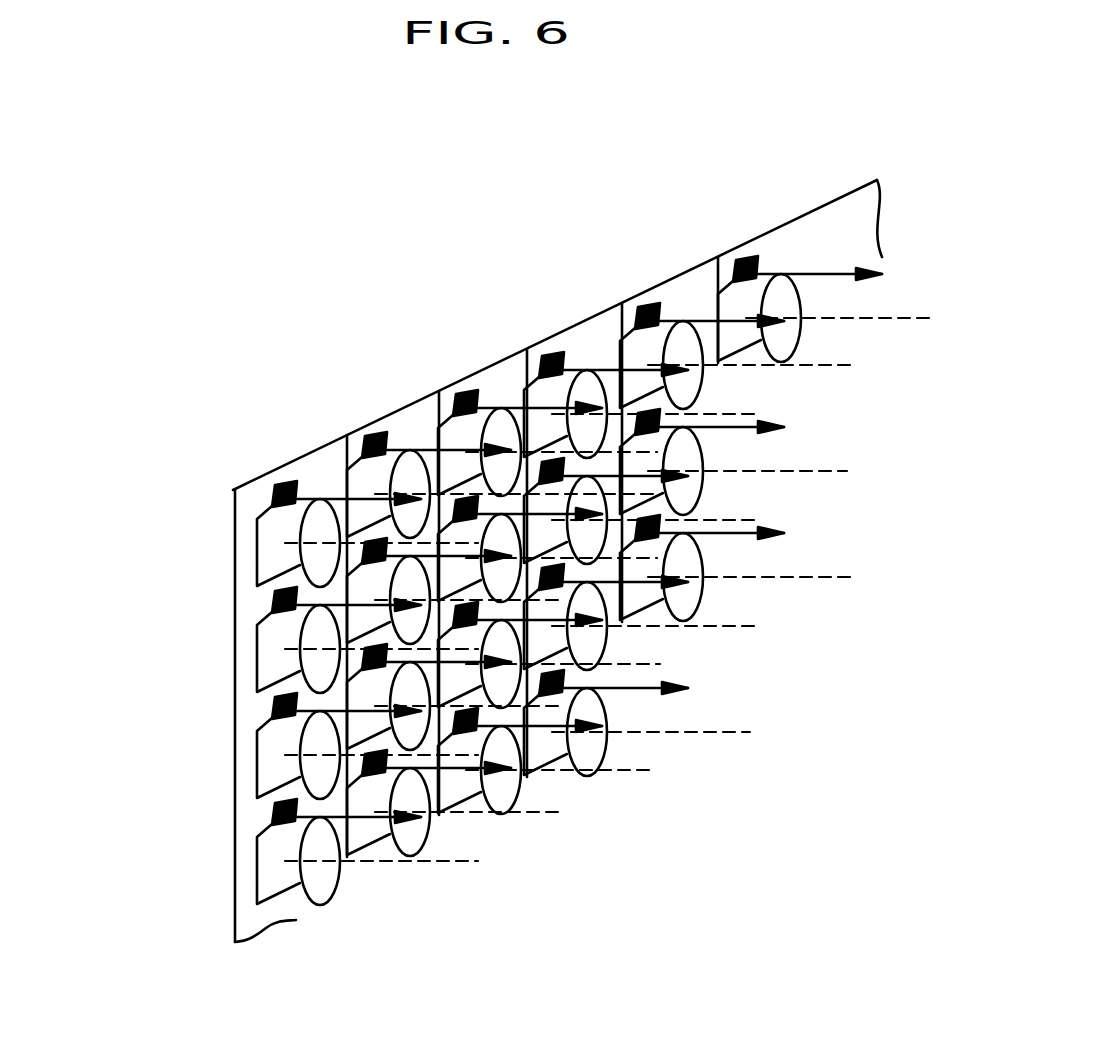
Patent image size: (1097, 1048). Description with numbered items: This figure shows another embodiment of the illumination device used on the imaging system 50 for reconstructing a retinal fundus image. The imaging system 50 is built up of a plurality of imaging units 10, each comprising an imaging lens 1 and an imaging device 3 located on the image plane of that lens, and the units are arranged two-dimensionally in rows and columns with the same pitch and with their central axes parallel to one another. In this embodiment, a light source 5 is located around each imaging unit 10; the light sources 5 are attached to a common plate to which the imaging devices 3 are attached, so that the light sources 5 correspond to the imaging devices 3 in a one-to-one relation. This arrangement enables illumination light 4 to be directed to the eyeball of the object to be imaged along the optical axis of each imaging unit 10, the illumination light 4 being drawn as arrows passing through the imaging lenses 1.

The imaging lens 1 is at (782, 197).
The imaging device 3 is at (700, 227).
The illumination light 4 is at (335, 496).
The light source 5 is at (737, 207).
The imaging unit 10 is at (279, 372).
The imaging system 50 is at (676, 851).